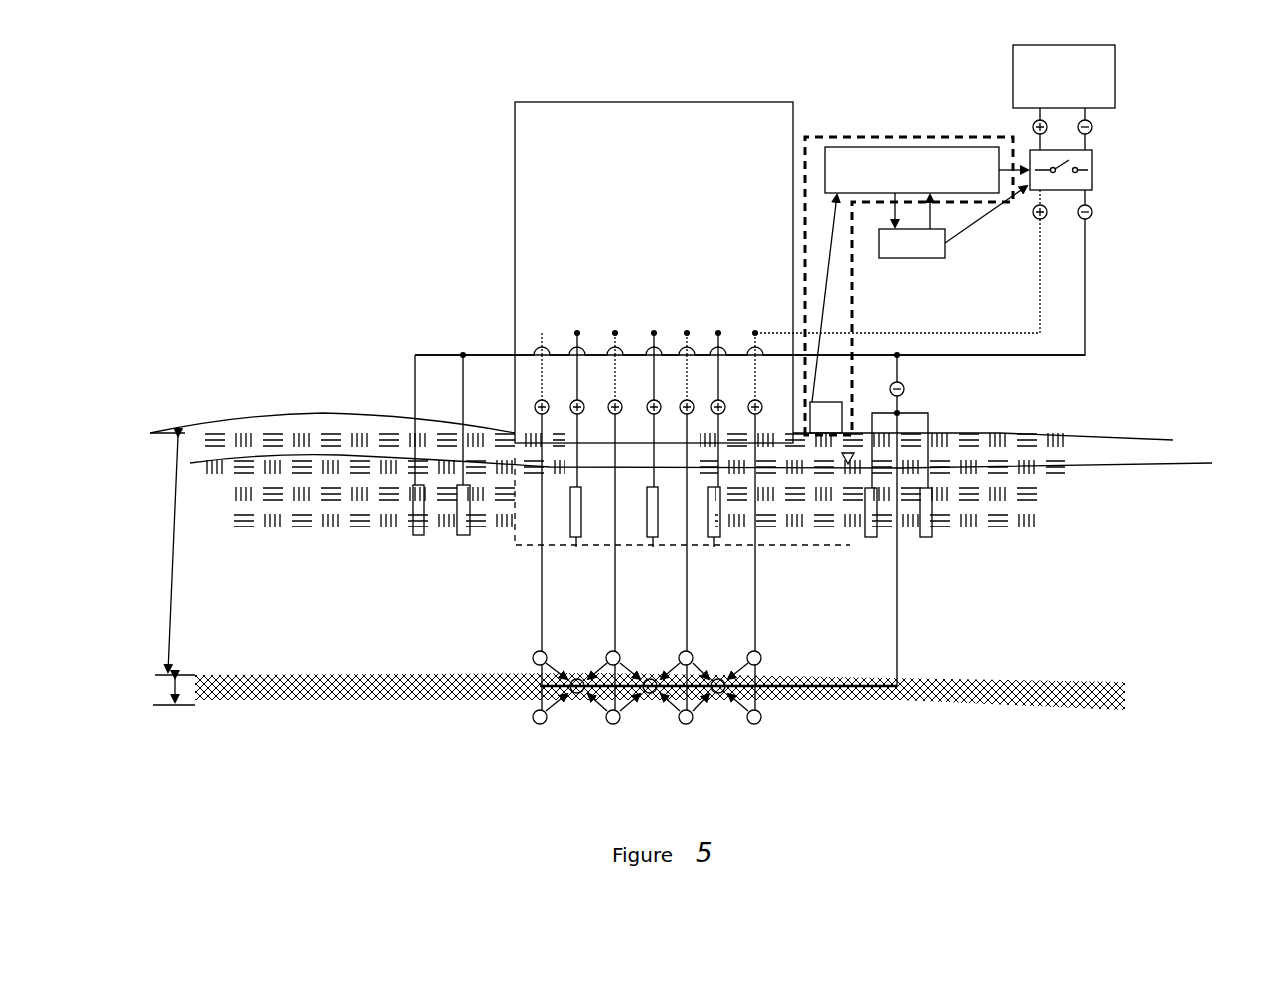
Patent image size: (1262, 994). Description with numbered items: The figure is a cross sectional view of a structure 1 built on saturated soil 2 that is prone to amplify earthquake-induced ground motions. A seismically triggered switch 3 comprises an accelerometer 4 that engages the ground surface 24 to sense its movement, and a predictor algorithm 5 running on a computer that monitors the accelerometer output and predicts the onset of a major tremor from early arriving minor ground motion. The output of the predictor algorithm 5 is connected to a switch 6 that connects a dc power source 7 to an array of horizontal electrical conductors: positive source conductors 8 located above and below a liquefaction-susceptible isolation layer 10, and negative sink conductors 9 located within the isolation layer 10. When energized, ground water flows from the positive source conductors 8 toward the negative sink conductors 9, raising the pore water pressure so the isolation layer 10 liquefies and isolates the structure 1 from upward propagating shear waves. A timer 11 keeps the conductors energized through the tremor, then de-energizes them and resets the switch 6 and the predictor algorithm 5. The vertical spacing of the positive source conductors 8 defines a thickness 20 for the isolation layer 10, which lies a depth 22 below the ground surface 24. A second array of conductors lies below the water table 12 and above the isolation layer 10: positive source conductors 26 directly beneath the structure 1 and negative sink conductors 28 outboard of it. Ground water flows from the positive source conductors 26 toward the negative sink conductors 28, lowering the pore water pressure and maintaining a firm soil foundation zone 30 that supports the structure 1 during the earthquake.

The structure 1 is at (578, 101).
The saturated soil 2 is at (1088, 583).
The seismically triggered switch 3 is at (845, 135).
The accelerometer 4 is at (843, 414).
The predictor algorithm 5 is at (910, 147).
The switch 6 is at (1094, 184).
The dc power source 7 is at (1013, 78).
The positive source conductors 8 is at (547, 652).
The negative sink conductors 9 is at (575, 679).
The isolation layer 10 is at (995, 680).
The timer 11 is at (915, 262).
The water table 12 is at (1195, 462).
The thickness 20 is at (175, 696).
The depth 22 is at (172, 543).
The ground surface 24 is at (1015, 433).
The positive source conductors 26 is at (641, 492).
The negative sink conductors 28 is at (950, 550).
The soil foundation zone 30 is at (517, 548).